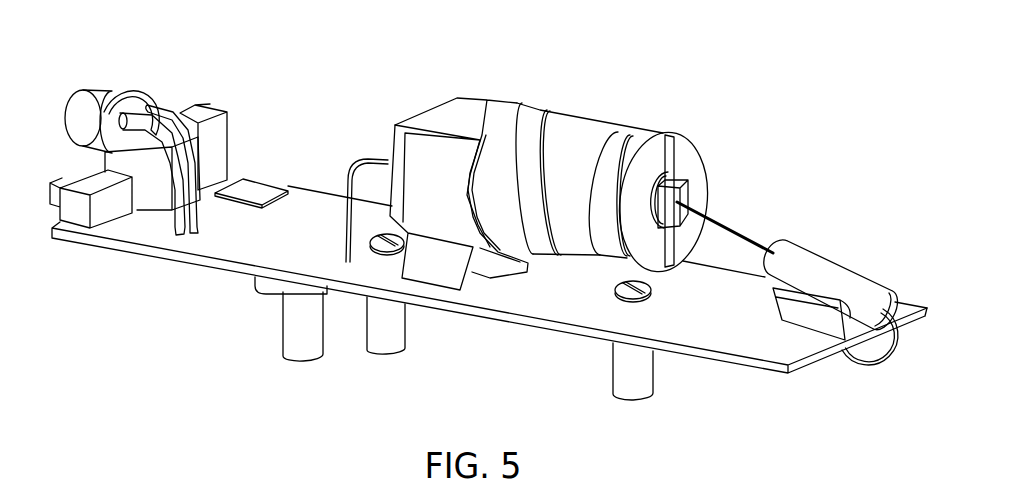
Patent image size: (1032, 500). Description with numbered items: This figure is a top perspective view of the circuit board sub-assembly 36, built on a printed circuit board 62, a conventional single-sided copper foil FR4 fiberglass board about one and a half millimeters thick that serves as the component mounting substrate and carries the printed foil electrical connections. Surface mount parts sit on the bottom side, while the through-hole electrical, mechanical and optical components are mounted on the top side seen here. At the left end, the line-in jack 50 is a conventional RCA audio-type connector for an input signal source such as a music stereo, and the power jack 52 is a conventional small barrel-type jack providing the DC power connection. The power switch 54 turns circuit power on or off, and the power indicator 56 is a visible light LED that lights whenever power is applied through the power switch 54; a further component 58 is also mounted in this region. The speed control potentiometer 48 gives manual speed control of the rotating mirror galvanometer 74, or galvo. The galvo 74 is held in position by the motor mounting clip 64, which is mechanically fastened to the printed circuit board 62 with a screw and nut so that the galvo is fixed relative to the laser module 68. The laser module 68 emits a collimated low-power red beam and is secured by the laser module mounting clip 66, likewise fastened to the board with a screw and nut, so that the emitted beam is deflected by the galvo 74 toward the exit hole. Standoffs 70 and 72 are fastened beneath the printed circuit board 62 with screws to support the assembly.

The circuit board sub-assembly 36 is at (487, 358).
The speed control potentiometer 48 is at (303, 327).
The line-in jack 50 is at (215, 132).
The power jack 52 is at (153, 183).
The power switch 54 is at (77, 210).
The power indicator 56 is at (135, 95).
The capacitor 58 is at (92, 112).
The printed circuit board 62 is at (277, 228).
The motor mounting clip 64 is at (427, 175).
The laser module mounting clip 66 is at (810, 310).
The laser module 68 is at (852, 293).
The standoff 70 is at (392, 333).
The standoff 72 is at (637, 368).
The rotating mirror galvanometer 74 is at (553, 95).